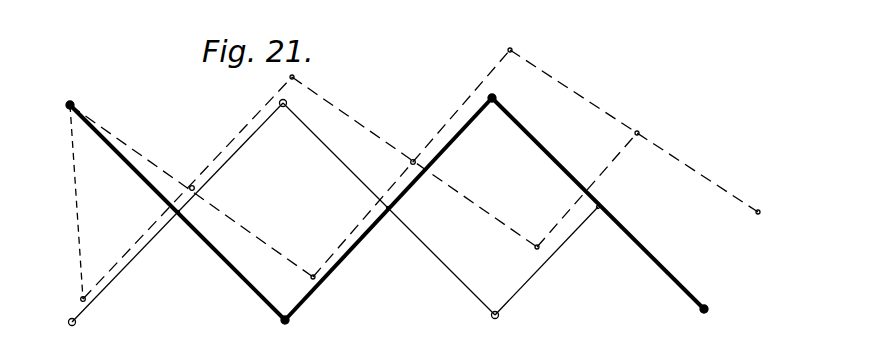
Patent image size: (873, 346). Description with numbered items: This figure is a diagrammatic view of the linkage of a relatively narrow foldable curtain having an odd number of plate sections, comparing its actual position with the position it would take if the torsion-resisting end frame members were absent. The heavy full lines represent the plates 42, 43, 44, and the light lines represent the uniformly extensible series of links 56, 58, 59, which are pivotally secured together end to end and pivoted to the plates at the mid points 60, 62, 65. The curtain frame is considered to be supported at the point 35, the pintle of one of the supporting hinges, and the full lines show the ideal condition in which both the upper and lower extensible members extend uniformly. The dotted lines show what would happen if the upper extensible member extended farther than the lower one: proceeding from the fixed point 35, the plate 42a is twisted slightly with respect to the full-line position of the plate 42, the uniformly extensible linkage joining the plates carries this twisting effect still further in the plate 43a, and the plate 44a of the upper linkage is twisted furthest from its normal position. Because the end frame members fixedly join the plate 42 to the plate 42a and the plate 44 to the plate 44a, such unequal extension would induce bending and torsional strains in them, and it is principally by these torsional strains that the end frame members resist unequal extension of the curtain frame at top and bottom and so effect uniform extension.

The point 35 is at (68, 107).
The plate 42 is at (148, 185).
The plate 42a is at (263, 217).
The plate 43 is at (402, 185).
The plate 43a is at (426, 152).
The plate 44 is at (657, 266).
The plate 44a is at (672, 159).
The link 56 is at (214, 175).
The link 58 is at (348, 168).
The link 59 is at (553, 254).
The mid point 60 is at (177, 214).
The mid point 62 is at (388, 210).
The mid point 65 is at (598, 208).